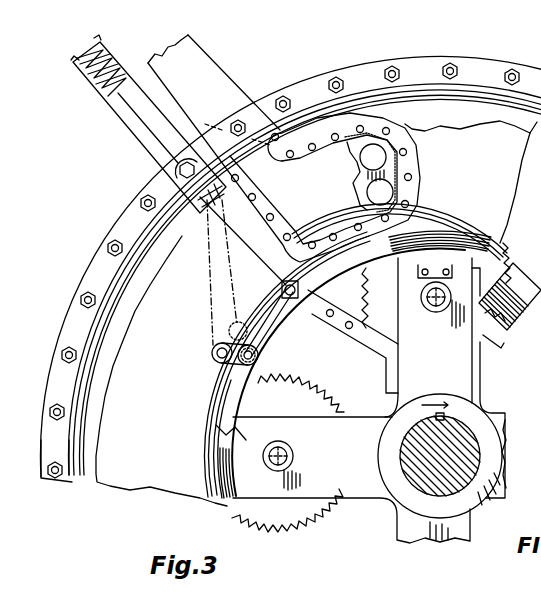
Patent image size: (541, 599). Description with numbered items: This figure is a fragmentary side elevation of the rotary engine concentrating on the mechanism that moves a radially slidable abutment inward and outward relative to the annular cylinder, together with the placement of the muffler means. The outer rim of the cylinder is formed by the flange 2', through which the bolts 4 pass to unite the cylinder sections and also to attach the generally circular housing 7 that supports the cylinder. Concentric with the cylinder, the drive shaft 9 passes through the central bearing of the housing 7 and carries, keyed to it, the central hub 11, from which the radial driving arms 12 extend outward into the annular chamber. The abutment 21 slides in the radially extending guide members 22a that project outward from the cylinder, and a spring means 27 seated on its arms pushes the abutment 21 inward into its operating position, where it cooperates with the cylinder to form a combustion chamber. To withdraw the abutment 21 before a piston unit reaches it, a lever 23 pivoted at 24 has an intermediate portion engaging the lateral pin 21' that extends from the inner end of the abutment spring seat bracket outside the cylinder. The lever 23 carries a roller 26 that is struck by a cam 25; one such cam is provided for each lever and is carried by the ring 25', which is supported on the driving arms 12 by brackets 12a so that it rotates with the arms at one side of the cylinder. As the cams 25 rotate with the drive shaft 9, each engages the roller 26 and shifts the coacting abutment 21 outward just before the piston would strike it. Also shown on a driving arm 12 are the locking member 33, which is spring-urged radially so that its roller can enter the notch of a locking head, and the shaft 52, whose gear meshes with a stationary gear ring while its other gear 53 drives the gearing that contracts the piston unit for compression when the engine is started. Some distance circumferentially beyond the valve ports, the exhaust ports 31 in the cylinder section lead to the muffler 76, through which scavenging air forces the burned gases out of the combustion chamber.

The flange 2' is at (290, 276).
The bolts 4 is at (457, 62).
The housing 7 is at (76, 478).
The drive shaft 9 is at (398, 470).
The central hub 11 is at (387, 432).
The radial driving arms 12 is at (462, 392).
The brackets 12a is at (351, 334).
The abutment 21 is at (171, 150).
The lateral pin 21' is at (260, 247).
The radially extending guide members 22a is at (132, 133).
The lever 23 is at (214, 263).
The pivot 24 is at (212, 355).
The cam 25 is at (214, 439).
The ring 25' is at (347, 364).
The roller 26 is at (263, 368).
The spring means 27 is at (86, 72).
The exhaust ports 31 is at (356, 190).
The locking member 33 is at (513, 306).
The shaft 52 is at (436, 312).
The gear 53 is at (310, 400).
The muffler 76 is at (198, 68).